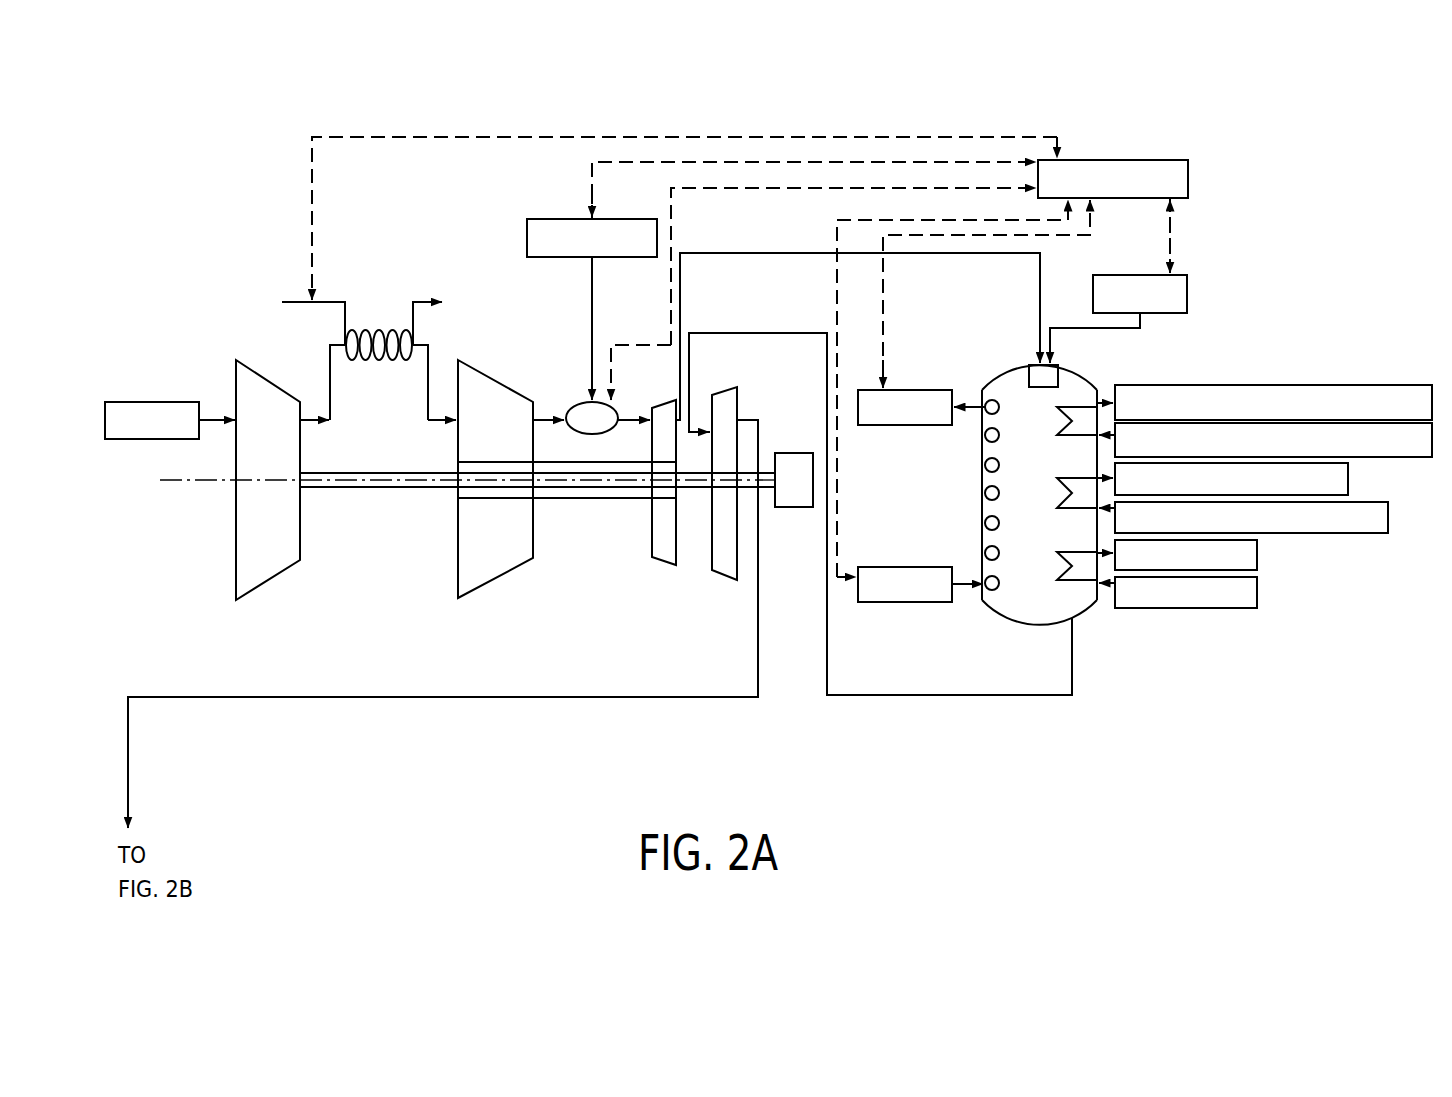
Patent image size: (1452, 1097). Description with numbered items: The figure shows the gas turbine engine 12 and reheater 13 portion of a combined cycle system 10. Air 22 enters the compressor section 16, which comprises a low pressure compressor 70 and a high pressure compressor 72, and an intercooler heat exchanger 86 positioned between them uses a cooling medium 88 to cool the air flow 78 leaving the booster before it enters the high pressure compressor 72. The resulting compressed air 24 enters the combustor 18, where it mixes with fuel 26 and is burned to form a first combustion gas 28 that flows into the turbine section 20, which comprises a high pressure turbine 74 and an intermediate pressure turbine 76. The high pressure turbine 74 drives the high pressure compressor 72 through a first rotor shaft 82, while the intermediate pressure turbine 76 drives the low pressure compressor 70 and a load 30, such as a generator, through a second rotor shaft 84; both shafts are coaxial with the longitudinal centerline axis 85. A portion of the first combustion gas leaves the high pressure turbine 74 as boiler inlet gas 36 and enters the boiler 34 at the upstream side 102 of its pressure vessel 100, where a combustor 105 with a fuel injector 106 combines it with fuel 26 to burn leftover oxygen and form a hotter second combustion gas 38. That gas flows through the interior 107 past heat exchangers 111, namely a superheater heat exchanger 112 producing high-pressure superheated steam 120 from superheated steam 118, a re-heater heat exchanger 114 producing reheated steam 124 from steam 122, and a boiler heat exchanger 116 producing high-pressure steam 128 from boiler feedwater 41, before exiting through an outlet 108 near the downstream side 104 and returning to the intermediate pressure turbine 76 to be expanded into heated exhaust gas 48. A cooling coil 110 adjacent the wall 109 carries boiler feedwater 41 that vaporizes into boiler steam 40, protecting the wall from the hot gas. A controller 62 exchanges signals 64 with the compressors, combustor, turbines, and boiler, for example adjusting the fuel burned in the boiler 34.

The combined cycle system 10 is at (1207, 140).
The gas turbine engine 12 is at (235, 228).
The reheater 13 is at (1237, 233).
The compressor section 16 is at (388, 632).
The combustor 18 is at (600, 436).
The turbine section 20 is at (672, 628).
The air 22 is at (152, 402).
The compressed air 24 is at (542, 417).
The fuel 26 is at (527, 238).
The first combustion gas 28 is at (628, 418).
The load 30 is at (795, 453).
The boiler 34 is at (1210, 340).
The boiler inlet gas 36 is at (681, 313).
The second combustion gas 38 is at (760, 333).
The boiler steam 40 is at (905, 388).
The boiler feedwater 41 is at (905, 567).
The heated exhaust gas 48 is at (420, 698).
The controller 62 is at (1189, 180).
The signals 64 is at (313, 178).
The low pressure compressor 70 is at (262, 580).
The high pressure compressor 72 is at (498, 580).
The high pressure turbine 74 is at (662, 566).
The intermediate pressure turbine 76 is at (725, 580).
The air flow 78 is at (310, 425).
The first rotor shaft 82 is at (568, 499).
The second rotor shaft 84 is at (378, 490).
The longitudinal centerline axis 85 is at (225, 483).
The intercooler heat exchanger 86 is at (430, 330).
The cooling medium 88 is at (426, 302).
The pressure vessel 100 is at (1105, 388).
The upstream side 102 is at (978, 385).
The downstream side 104 is at (978, 608).
The combustor 105 is at (1060, 368).
The fuel injector 106 is at (1050, 424).
The interior 107 is at (1107, 388).
The outlet 108 is at (1072, 628).
The wall 109 is at (985, 455).
The cooling coil 110 is at (986, 492).
The heat exchangers 111 is at (1105, 615).
The superheater heat exchanger 112 is at (1040, 418).
The re-heater heat exchanger 114 is at (1050, 495).
The boiler heat exchanger 116 is at (1050, 568).
The superheated steam 118 is at (1422, 400).
The high-pressure superheated steam 120 is at (1320, 385).
The steam 122 is at (1389, 525).
The reheated steam 124 is at (1349, 480).
The high-pressure steam 128 is at (1258, 553).